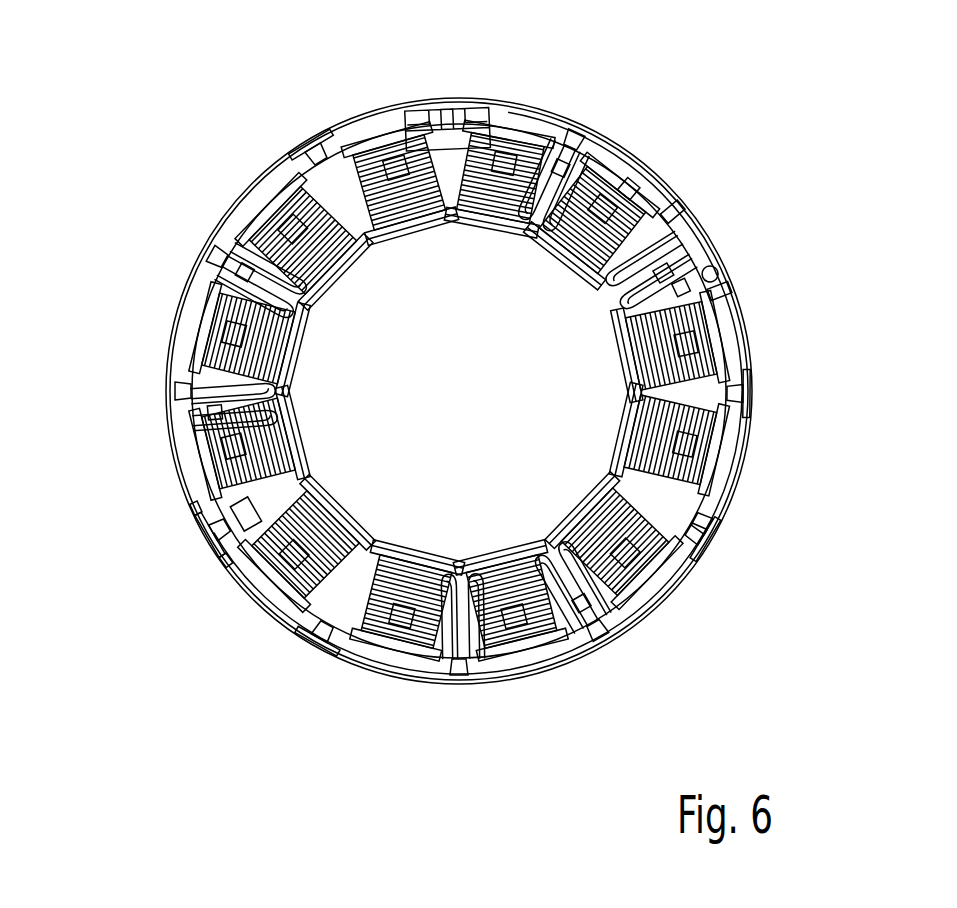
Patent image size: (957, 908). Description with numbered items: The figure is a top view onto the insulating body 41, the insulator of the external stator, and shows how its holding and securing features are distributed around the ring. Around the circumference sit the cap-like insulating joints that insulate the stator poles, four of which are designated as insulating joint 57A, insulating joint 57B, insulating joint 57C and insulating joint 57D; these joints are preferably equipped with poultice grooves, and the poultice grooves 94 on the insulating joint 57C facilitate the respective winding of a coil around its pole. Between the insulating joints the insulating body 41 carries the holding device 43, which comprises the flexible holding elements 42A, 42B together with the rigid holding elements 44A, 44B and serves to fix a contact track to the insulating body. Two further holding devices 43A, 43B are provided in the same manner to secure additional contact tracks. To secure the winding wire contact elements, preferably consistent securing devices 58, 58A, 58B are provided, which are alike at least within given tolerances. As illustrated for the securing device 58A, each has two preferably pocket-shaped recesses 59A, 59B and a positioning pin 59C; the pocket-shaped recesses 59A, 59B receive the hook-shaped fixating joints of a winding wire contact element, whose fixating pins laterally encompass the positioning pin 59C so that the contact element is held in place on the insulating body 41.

The insulating body 41 is at (243, 72).
The securing device 58 is at (456, 76).
The rigid holding element 44A is at (570, 163).
The flexible holding element 42A is at (616, 145).
The holding device 43 is at (626, 148).
The flexible holding element 42B is at (690, 255).
The rigid holding element 44B is at (702, 273).
The cap-like insulating joint 57A is at (402, 192).
The cap-like insulating joint 57B is at (500, 195).
The cap-like insulating joint 57C is at (600, 242).
The cap-like insulating joint 57D is at (655, 362).
The poultice grooves 94 is at (645, 281).
The holding device 43A is at (312, 302).
The holding device 43B is at (542, 540).
The pocket-shaped recess 59A is at (172, 514).
The securing device 58A is at (180, 541).
The pocket-shaped recess 59B is at (204, 582).
The positioning pin 59C is at (238, 518).
The securing device 58B is at (726, 552).